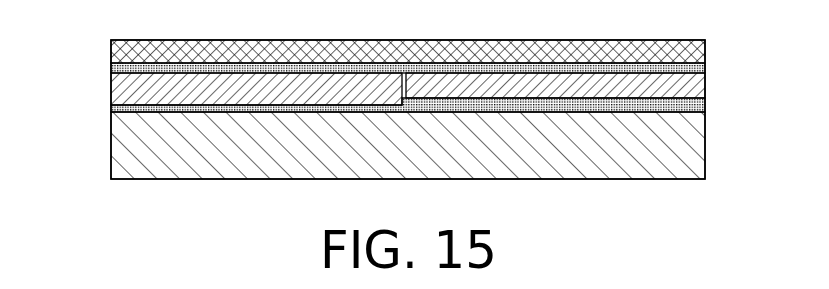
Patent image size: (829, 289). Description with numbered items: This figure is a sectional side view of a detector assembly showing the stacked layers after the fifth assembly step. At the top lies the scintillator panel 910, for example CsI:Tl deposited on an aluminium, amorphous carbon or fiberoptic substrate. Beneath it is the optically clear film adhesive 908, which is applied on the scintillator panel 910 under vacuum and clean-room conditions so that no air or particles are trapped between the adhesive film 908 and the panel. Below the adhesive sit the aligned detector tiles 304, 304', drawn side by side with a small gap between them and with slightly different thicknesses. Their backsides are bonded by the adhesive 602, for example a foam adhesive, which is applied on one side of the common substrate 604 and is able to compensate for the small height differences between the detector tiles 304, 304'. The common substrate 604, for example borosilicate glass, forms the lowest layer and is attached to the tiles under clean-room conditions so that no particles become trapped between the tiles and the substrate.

The scintillator panel 910 is at (705, 52).
The optically clear film adhesive 908 is at (111, 68).
The detector tile 304 is at (216, 88).
The detector tile 304' is at (599, 85).
The adhesive 602 is at (705, 108).
The common substrate 604 is at (116, 160).